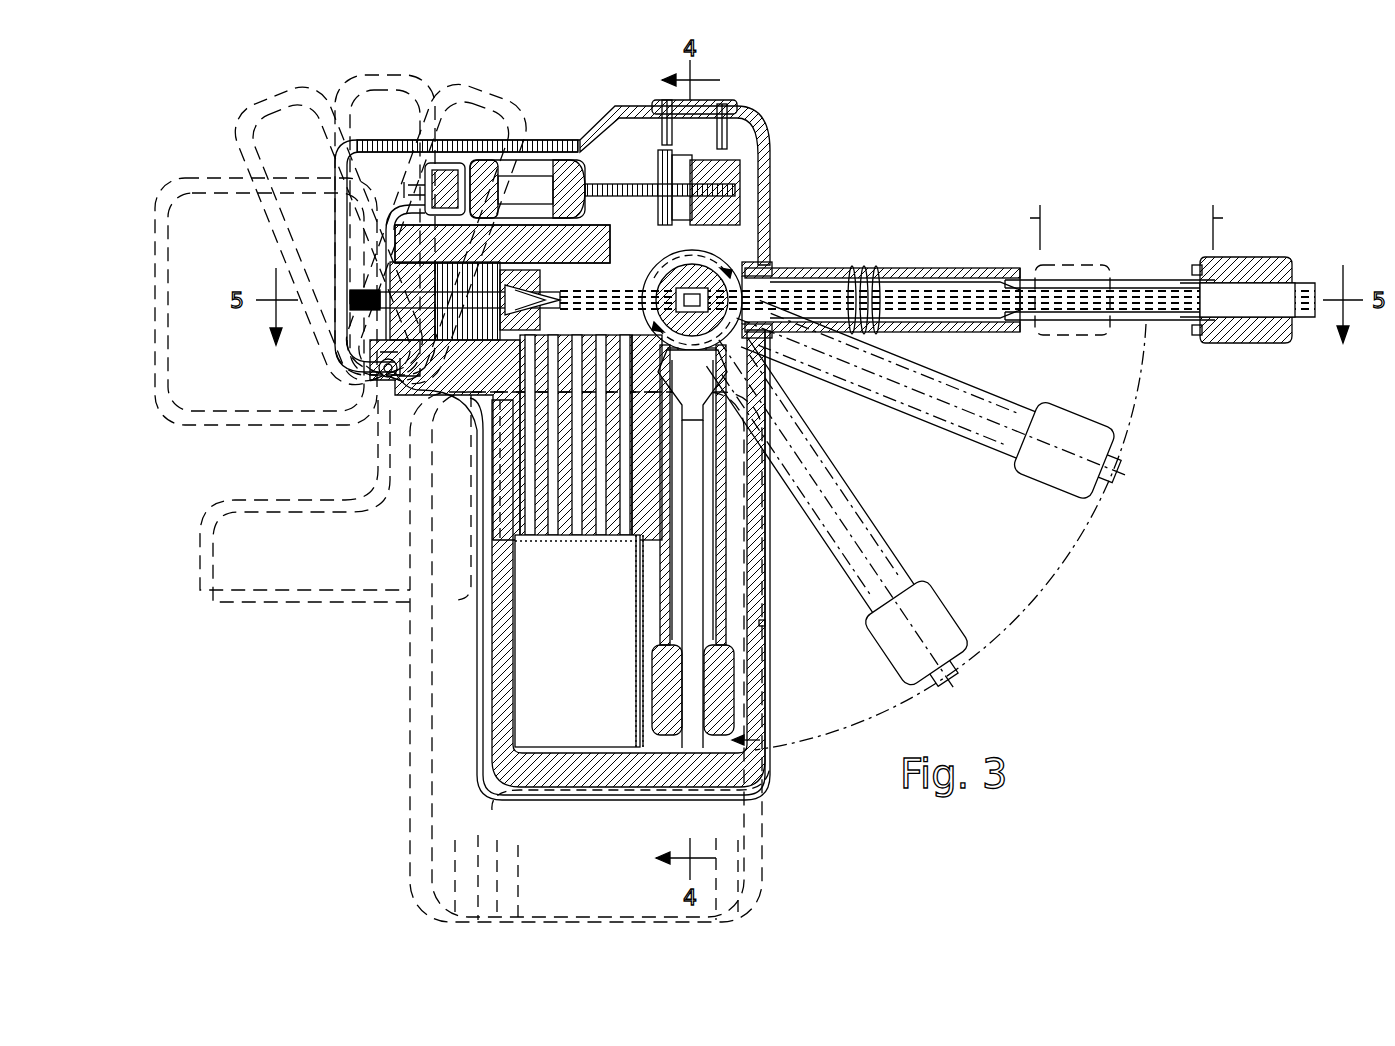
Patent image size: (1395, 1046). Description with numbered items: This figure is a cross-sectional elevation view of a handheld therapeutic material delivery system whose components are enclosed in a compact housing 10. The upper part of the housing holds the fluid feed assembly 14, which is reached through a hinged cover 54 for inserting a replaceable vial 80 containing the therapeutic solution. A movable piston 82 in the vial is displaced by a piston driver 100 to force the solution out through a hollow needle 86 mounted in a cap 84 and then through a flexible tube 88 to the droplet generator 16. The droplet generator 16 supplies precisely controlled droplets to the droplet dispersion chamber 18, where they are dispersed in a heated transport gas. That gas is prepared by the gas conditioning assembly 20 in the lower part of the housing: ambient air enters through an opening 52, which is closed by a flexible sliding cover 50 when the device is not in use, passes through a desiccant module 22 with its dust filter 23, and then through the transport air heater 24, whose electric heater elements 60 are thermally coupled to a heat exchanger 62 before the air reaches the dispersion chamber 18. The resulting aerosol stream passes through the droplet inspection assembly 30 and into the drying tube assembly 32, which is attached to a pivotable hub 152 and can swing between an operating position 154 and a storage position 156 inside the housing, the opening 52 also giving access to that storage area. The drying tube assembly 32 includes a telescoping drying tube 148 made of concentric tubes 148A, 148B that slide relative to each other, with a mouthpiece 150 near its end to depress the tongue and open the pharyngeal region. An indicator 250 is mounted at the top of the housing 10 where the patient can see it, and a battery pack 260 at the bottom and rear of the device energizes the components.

The housing 10 is at (480, 668).
The fluid feed assembly 14 is at (562, 165).
The droplet generator 16 is at (350, 338).
The droplet dispersion chamber 18 is at (832, 316).
The gas conditioning assembly 20 is at (503, 616).
The desiccant module 22 is at (595, 636).
The dust filter 23 is at (640, 662).
The transport air heater 24 is at (532, 480).
The droplet inspection assembly 30 is at (660, 272).
The drying tube assembly 32 is at (934, 197).
The flexible sliding cover 50 is at (565, 800).
The opening 52 is at (770, 675).
The hinged cover 54 is at (336, 192).
The electric heater elements 60 is at (595, 410).
The heat exchanger 62 is at (520, 502).
The replaceable vial 80 is at (492, 170).
The movable piston 82 is at (545, 165).
The cap 84 is at (420, 188).
The hollow needle 86 is at (472, 225).
The flexible tube 88 is at (348, 266).
The piston driver 100 is at (662, 178).
The drying tube 148 is at (900, 270).
The concentric tube 148A is at (915, 332).
The concentric tube 148B is at (1075, 336).
The mouthpiece 150 is at (993, 477).
The pivotable hub 152 is at (770, 265).
The operating position 154 is at (1002, 280).
The storage position 156 is at (735, 550).
The indicator 250 is at (742, 110).
The battery pack 260 is at (432, 830).